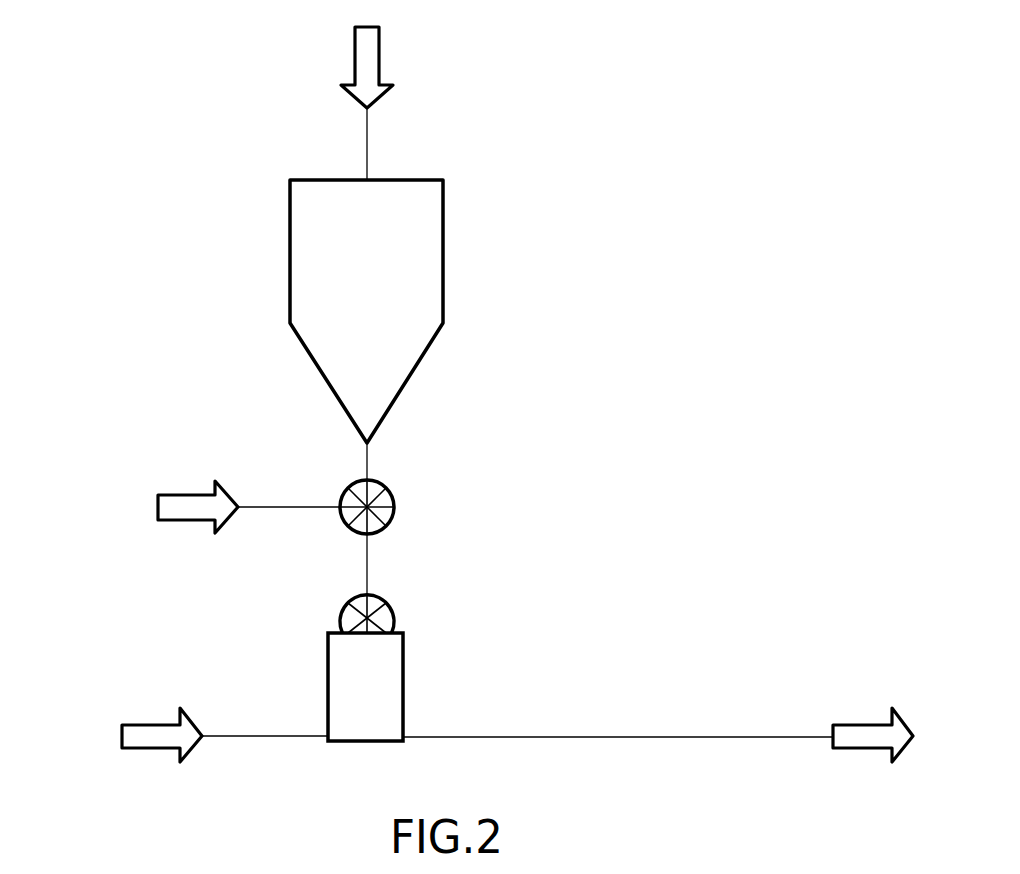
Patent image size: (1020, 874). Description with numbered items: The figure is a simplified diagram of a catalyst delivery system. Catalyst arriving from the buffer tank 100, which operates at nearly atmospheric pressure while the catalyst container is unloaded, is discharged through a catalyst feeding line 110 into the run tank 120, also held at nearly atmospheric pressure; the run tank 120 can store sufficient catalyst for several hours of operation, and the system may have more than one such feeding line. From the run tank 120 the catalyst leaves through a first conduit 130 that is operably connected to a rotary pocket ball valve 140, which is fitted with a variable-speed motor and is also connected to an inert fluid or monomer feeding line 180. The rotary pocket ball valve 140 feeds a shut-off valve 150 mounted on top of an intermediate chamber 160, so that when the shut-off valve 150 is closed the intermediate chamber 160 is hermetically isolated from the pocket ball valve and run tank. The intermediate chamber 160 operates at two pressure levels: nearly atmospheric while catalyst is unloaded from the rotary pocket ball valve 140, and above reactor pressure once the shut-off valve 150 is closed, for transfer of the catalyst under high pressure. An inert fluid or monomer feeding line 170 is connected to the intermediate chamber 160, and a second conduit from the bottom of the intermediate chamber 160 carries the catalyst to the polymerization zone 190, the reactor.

The buffer tank 100 is at (368, 52).
The catalyst feeding line 110 is at (370, 143).
The run tank 120 is at (425, 235).
The first conduit 130 is at (372, 462).
The rotary pocket ball valve 140 is at (384, 508).
The shut-off valve 150 is at (380, 621).
The intermediate chamber 160 is at (375, 715).
The inert fluid or monomer feeding line 170 is at (152, 732).
The inert fluid or monomer feeding line 180 is at (188, 503).
The polymerization zone 190 is at (863, 732).